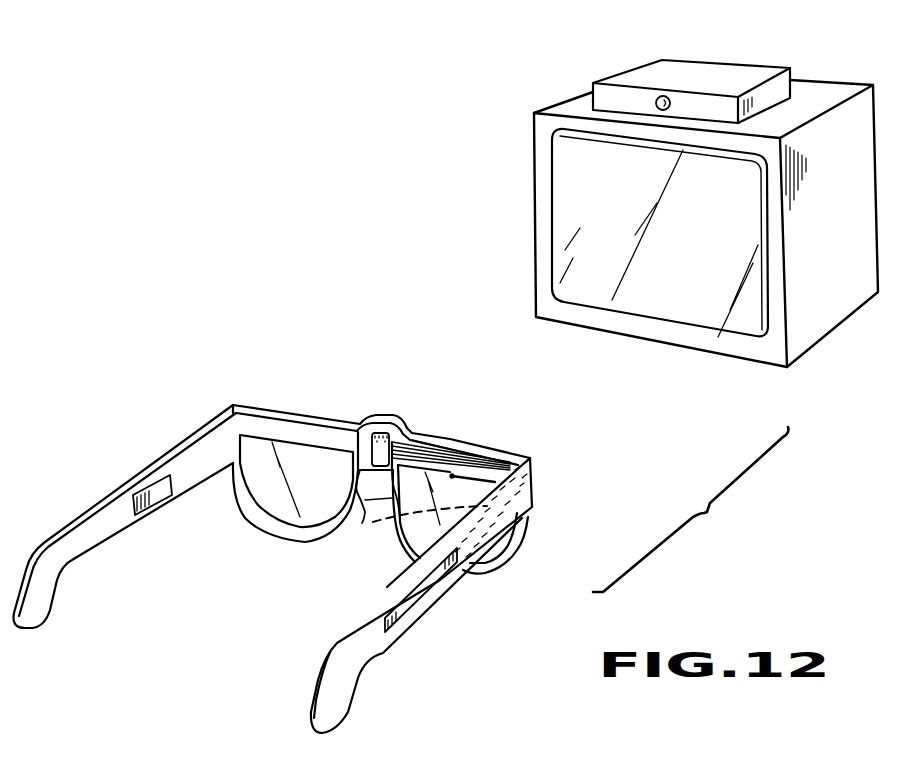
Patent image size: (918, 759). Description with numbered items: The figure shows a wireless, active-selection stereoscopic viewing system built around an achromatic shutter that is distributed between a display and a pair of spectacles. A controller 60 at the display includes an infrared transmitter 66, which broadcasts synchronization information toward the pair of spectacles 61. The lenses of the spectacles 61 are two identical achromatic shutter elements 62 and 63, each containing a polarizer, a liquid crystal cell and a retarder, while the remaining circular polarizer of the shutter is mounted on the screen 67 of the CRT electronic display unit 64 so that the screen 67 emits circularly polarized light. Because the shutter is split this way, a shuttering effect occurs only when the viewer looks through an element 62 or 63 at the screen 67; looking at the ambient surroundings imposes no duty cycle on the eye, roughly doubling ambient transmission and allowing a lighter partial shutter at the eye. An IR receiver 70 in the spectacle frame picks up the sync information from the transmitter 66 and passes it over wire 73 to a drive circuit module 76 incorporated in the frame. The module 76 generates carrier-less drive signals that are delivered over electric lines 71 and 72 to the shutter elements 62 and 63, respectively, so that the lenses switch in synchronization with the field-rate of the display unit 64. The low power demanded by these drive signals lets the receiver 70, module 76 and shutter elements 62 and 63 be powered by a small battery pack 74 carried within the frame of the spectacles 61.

The controller 60 is at (720, 68).
The pair of spectacles 61 is at (383, 660).
The achromatic shutter element 62 is at (277, 518).
The achromatic shutter element 63 is at (413, 540).
The electronic display unit 64 is at (820, 333).
The infrared transmitter 66 is at (657, 96).
The screen 67 is at (690, 315).
The IR receiver 70 is at (380, 432).
The electric line 71 is at (368, 512).
The electric line 72 is at (483, 470).
The wire 73 is at (422, 438).
The battery pack 74 is at (155, 487).
The drive circuit module 76 is at (422, 592).